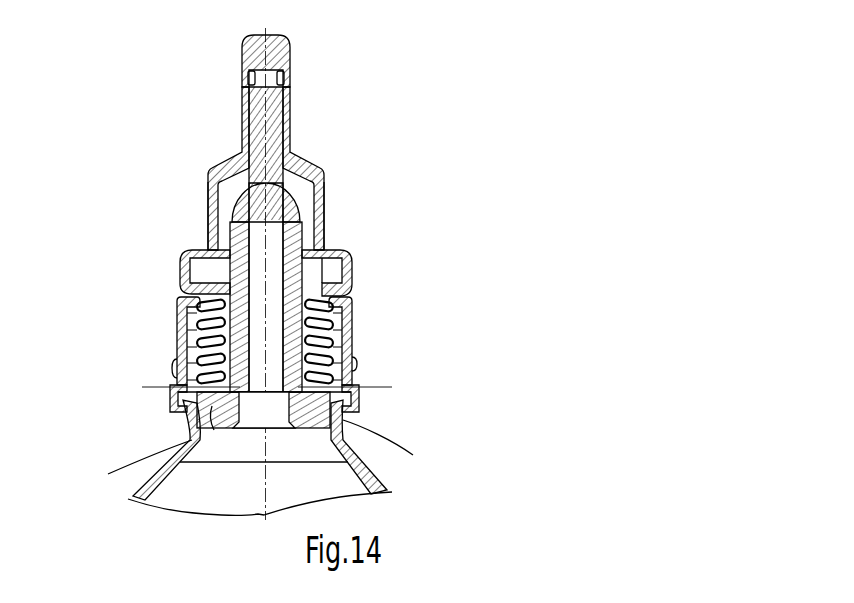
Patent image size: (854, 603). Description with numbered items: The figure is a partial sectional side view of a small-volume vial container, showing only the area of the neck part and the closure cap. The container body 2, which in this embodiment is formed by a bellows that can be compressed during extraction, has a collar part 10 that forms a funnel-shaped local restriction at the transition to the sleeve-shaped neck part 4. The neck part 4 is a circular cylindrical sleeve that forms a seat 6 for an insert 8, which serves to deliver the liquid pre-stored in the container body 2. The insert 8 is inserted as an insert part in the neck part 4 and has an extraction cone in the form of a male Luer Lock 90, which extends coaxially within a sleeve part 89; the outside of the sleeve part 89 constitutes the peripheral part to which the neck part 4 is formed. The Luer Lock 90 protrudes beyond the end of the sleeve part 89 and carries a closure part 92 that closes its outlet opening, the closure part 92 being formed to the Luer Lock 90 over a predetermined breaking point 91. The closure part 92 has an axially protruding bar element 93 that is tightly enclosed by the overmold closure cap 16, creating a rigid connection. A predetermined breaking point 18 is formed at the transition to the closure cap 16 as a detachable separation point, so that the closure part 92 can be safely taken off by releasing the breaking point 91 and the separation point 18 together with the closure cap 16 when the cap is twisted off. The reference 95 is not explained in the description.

The bar element 93 is at (277, 116).
The closure part 92 is at (322, 178).
The predetermined breaking point 91 is at (230, 213).
The closure cap 16 is at (322, 224).
The male Luer Lock 90 is at (333, 255).
The sleeve part 89 is at (195, 345).
The predetermined breaking point 18 is at (338, 294).
The neck part 4 is at (178, 360).
The seat 6 is at (175, 400).
The nut 95 is at (355, 395).
The insert 8 is at (178, 447).
The collar part 10 is at (342, 421).
The container body 2 is at (136, 483).